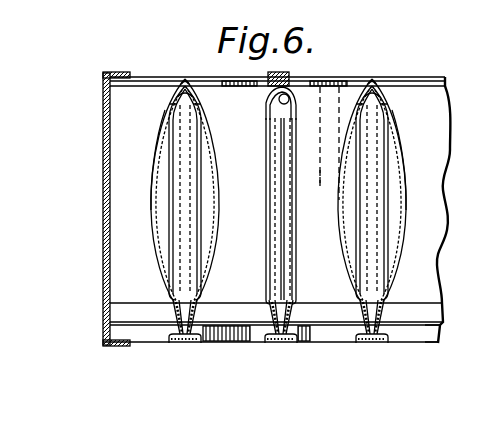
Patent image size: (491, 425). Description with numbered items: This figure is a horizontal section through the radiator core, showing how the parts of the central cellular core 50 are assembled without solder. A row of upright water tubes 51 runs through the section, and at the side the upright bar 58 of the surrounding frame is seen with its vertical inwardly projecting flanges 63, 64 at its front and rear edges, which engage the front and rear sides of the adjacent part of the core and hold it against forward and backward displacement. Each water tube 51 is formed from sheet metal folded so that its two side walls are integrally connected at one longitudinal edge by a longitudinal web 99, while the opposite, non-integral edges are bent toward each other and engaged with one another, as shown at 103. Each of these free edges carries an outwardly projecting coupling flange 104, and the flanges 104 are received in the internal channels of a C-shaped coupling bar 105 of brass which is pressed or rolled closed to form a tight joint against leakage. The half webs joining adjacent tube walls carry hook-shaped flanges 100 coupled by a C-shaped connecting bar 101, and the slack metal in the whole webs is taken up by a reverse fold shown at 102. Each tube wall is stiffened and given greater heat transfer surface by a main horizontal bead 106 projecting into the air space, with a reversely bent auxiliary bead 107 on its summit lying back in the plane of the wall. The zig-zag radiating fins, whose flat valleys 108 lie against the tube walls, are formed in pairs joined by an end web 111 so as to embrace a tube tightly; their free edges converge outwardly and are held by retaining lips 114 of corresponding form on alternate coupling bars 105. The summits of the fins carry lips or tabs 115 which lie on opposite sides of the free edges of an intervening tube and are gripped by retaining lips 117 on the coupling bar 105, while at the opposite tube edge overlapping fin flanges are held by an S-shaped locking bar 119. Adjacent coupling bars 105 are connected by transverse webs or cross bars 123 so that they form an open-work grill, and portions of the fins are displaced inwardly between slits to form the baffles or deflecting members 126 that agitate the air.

The central cellular core 50 is at (339, 83).
The upright water tube 51 is at (183, 148).
The side wall 58 is at (103, 146).
The front flange of upright frame bar 63 is at (126, 346).
The rear flange of upright frame bar 64 is at (122, 72).
The longitudinal web 99 is at (196, 92).
The hook-shaped flange 100 is at (324, 80).
The coupling bar 101 is at (330, 182).
The reverse fold of whole web 102 is at (240, 83).
The engaged non-integral edges of water tube walls 103 is at (197, 302).
The coupling flange 104 is at (180, 345).
The C-shaped coupling bar 105 is at (196, 345).
The main horizontal bead 106 is at (199, 106).
The auxiliary bead 107 is at (170, 190).
The flat valley 108 is at (168, 226).
The end web 111 is at (200, 62).
The retaining lip 114 is at (178, 310).
The lip or tab 115 is at (158, 325).
The retaining lip 117 is at (243, 346).
The locking bar 119 is at (279, 72).
The transverse web or cross bar 123 is at (437, 334).
The baffle or deflecting member 126 is at (159, 255).